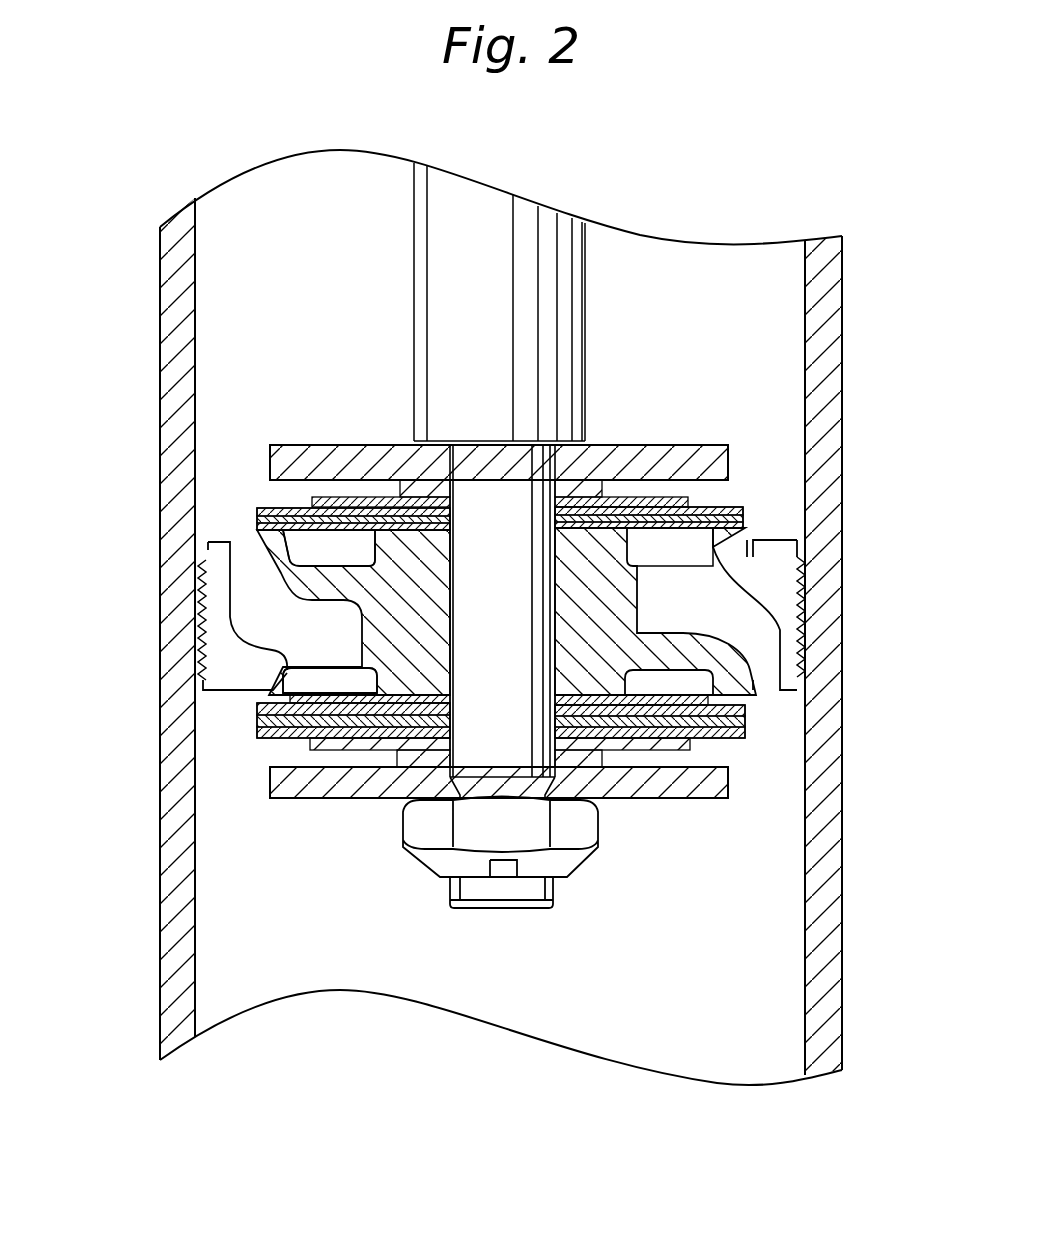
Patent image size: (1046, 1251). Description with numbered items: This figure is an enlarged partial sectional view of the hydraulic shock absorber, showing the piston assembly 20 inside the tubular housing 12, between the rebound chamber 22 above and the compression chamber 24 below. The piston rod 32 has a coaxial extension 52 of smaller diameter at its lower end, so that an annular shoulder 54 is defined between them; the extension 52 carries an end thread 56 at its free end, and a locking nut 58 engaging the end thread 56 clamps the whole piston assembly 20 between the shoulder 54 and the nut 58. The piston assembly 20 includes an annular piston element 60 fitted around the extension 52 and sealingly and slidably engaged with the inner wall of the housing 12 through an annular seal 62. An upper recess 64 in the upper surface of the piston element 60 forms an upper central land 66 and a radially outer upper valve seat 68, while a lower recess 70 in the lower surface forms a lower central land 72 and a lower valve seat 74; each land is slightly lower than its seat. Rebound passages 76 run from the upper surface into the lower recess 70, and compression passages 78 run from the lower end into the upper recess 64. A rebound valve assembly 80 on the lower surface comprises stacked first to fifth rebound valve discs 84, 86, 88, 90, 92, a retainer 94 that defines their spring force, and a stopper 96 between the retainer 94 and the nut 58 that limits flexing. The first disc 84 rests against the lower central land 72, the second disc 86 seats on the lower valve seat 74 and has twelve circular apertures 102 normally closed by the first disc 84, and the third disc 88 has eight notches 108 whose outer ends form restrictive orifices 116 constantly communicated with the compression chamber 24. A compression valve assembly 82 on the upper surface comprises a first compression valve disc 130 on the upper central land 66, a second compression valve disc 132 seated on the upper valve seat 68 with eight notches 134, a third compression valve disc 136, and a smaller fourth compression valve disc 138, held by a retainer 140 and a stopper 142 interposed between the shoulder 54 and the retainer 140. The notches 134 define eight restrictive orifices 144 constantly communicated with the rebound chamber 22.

The tubular housing 12 is at (176, 303).
The piston assembly 20 is at (779, 502).
The rebound chamber 22 is at (296, 285).
The compression chamber 24 is at (667, 1012).
The piston rod 32 is at (532, 228).
The extension 52 is at (506, 450).
The annular shoulder 54 is at (392, 445).
The end thread 56 is at (557, 888).
The locking nut 58 is at (583, 842).
The piston element 60 is at (585, 580).
The annular seal 62 is at (200, 567).
The upper recess 64 is at (718, 543).
The upper central land 66 is at (432, 550).
The upper valve seat 68 is at (257, 549).
The lower recess 70 is at (203, 690).
The lower central land 72 is at (428, 688).
The lower valve seat 74 is at (738, 680).
The rebound passages 76 is at (228, 620).
The compression passages 78 is at (782, 623).
The rebound valve assembly 80 is at (247, 745).
The compression valve assembly 82 is at (258, 496).
The first rebound valve disc 84 is at (578, 698).
The second rebound valve disc 86 is at (570, 715).
The third rebound valve disc 88 is at (565, 736).
The fourth rebound valve disc 90 is at (693, 739).
The fifth rebound valve disc 92 is at (692, 744).
The retainer 94 is at (600, 768).
The stopper 96 is at (362, 790).
The circular apertures 102 is at (340, 697).
The notches 108 is at (318, 742).
The restrictive orifices 116 is at (260, 720).
The first compression valve disc 130 is at (557, 530).
The second compression valve disc 132 is at (557, 508).
The notches 134 is at (329, 548).
The third compression valve disc 136 is at (622, 457).
The fourth compression valve disc 138 is at (632, 502).
The retainer 140 is at (297, 455).
The stopper 142 is at (352, 445).
The restrictive orifices 144 is at (262, 515).